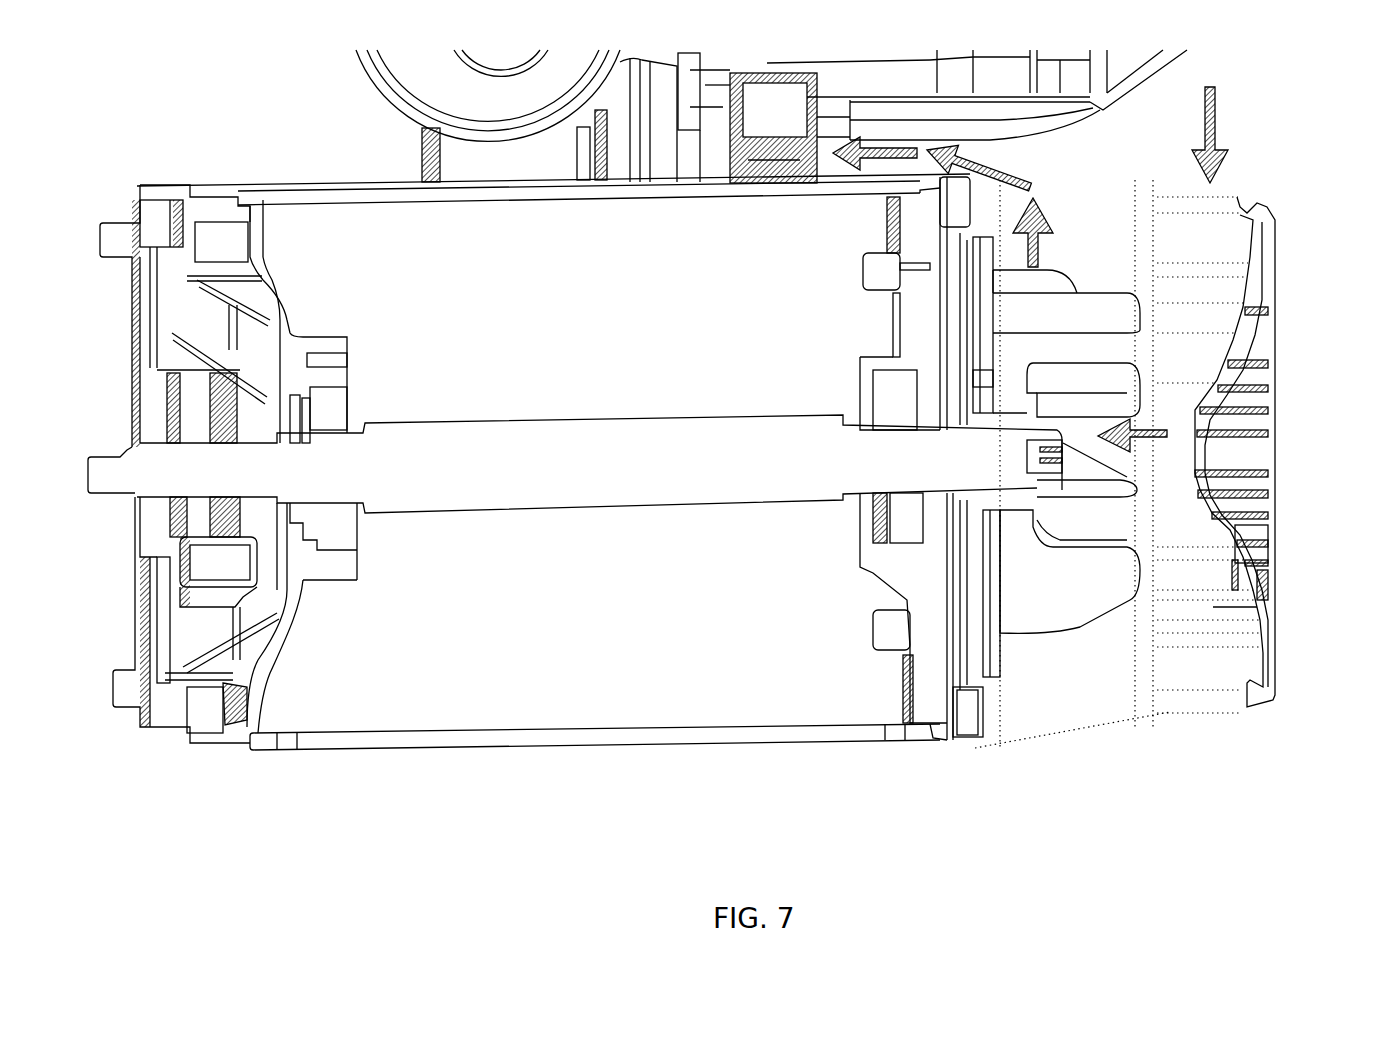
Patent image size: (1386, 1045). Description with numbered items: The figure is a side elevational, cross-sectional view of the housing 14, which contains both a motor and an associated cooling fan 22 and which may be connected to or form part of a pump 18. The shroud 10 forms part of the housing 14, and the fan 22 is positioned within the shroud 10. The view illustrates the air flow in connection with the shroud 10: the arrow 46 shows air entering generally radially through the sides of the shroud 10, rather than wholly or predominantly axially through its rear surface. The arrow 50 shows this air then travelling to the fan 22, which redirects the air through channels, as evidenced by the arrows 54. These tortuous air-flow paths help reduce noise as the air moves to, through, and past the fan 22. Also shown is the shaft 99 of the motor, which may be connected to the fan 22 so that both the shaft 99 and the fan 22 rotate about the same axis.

The shroud 10 is at (1245, 185).
The housing 14 is at (605, 752).
The pump 18 is at (323, 792).
The cooling fan 22 is at (1023, 600).
The arrow 46 is at (1209, 119).
The arrow 50 is at (1139, 422).
The arrows 54 is at (1017, 163).
The shaft 99 is at (467, 482).